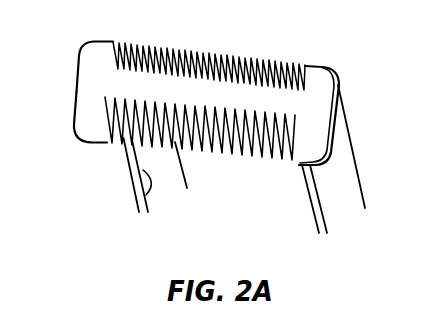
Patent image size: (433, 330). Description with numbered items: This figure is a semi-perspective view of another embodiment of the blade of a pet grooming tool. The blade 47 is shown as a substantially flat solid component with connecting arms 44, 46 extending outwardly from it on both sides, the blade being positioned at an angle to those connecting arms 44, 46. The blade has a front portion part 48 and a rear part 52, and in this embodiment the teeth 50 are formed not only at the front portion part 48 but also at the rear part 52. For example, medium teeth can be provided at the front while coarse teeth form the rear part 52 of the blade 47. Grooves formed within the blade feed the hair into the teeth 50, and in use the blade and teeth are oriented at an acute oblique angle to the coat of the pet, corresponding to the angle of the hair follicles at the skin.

The connecting arm 44 is at (147, 192).
The connecting arm 46 is at (346, 183).
The blade 47 is at (88, 65).
The front portion part 48 is at (88, 125).
The teeth 50 is at (140, 173).
The rear part 52 is at (313, 78).